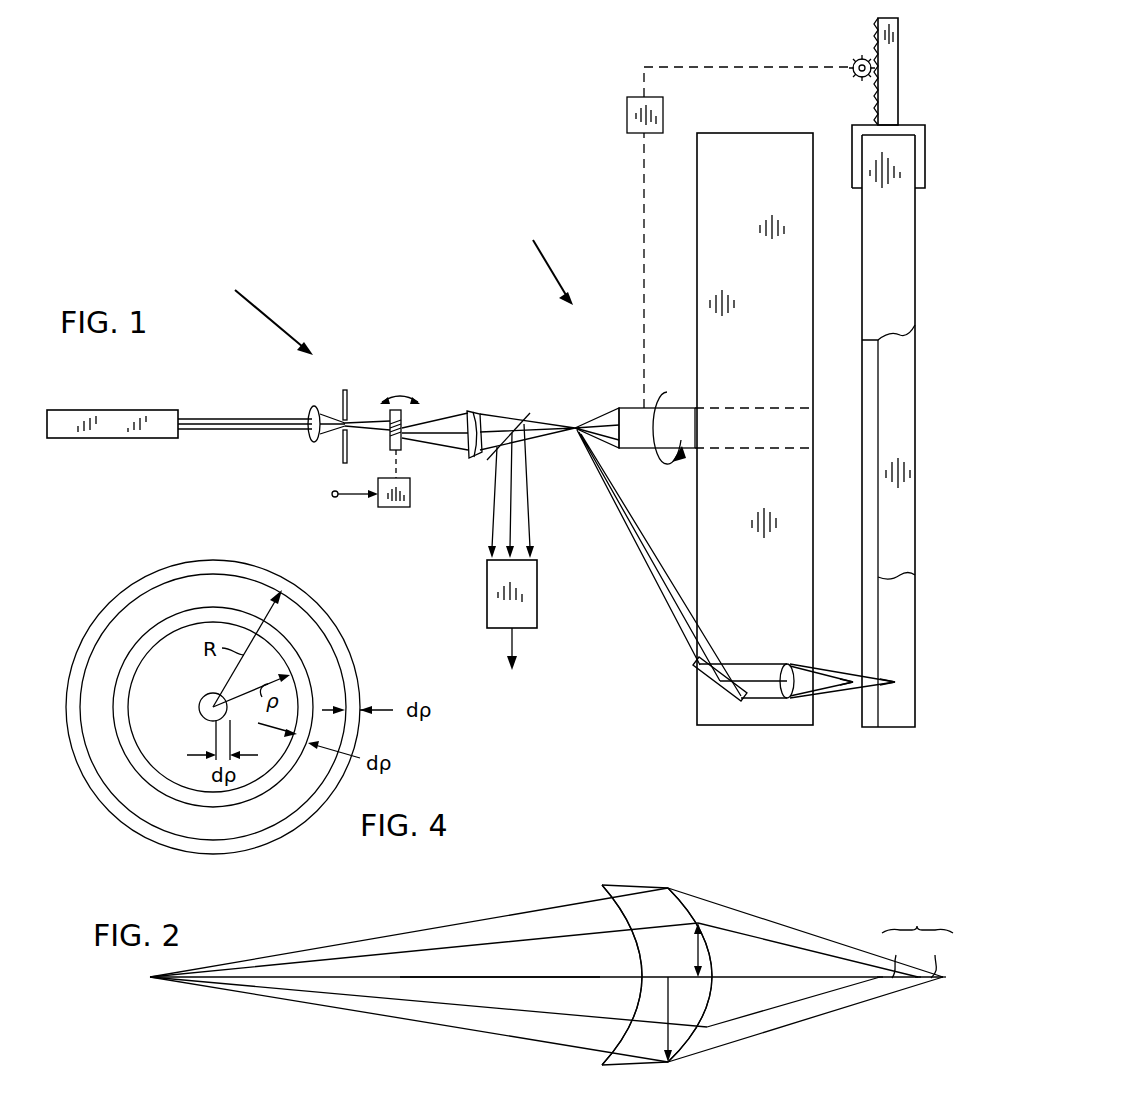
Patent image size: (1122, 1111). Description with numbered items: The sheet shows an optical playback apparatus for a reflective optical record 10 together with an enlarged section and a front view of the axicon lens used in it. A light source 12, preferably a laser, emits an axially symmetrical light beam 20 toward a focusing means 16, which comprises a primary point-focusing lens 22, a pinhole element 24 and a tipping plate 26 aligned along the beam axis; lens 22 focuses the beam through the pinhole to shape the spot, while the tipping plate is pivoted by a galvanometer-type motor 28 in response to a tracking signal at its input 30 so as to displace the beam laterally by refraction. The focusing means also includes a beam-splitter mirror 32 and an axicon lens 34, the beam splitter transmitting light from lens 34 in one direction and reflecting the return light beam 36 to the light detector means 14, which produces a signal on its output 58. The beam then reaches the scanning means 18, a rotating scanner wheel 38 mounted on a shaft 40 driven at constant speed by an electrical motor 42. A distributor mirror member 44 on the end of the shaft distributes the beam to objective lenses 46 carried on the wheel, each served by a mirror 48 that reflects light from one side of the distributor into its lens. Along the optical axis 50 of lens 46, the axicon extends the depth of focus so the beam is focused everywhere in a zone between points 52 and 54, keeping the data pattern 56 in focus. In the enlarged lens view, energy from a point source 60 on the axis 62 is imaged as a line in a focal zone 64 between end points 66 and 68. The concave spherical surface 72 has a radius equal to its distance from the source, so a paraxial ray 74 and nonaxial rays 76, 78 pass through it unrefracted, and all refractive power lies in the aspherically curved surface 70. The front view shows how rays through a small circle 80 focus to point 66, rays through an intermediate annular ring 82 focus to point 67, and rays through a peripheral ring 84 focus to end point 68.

In FIG. 1, the optical record 10 is at (862, 262).
In FIG. 1, the light source 12 is at (155, 408).
In FIG. 1, the light detector means 14 is at (538, 573).
In FIG. 1, the focusing means 16 is at (259, 314).
In FIG. 1, the scanning means 18 is at (539, 259).
In FIG. 1, the light beam 20 is at (216, 420).
In FIG. 1, the primary point-focusing lens 22 is at (314, 443).
In FIG. 1, the pinhole element 24 is at (350, 393).
In FIG. 1, the tipping plate 26 is at (405, 412).
In FIG. 1, the galvanometer-type motor 28 is at (394, 508).
In FIG. 1, the input 30 is at (331, 495).
In FIG. 1, the beam-splitter mirror 32 is at (515, 415).
In FIG. 1, the axicon lens 34 is at (470, 410).
In FIG. 2, the axicon lens 34 is at (636, 885).
In FIG. 1, the return light beam 36 is at (530, 516).
In FIG. 1, the rotating scanner wheel 38 is at (737, 133).
In FIG. 1, the shaft 40 is at (688, 405).
In FIG. 1, the electrical motor 42 is at (627, 112).
In FIG. 1, the distributor mirror member 44 is at (603, 410).
In FIG. 1, the objective lenses 46 is at (787, 700).
In FIG. 1, the mirror 48 is at (722, 700).
In FIG. 1, the optical axis 50 is at (832, 670).
In FIG. 1, the focal zone end point 52 is at (853, 688).
In FIG. 1, the focal zone end point 54 is at (897, 688).
In FIG. 1, the data pattern 56 is at (915, 575).
In FIG. 1, the output 58 is at (505, 648).
In FIG. 2, the point source 60 is at (150, 978).
In FIG. 2, the axis 62 is at (523, 978).
In FIG. 2, the focal zone 64 is at (917, 928).
In FIG. 2, the end point 66 is at (880, 980).
In FIG. 2, the point 67 is at (918, 980).
In FIG. 2, the end point 68 is at (943, 980).
In FIG. 2, the surface 70 is at (700, 902).
In FIG. 2, the surface 72 is at (600, 912).
In FIG. 2, the paraxial ray 74 is at (223, 975).
In FIG. 2, the nonaxial ray 76 is at (298, 961).
In FIG. 2, the nonaxial ray 78 is at (350, 942).
In FIG. 4, the small circle 80 is at (199, 703).
In FIG. 2, the small circle 80 is at (713, 977).
In FIG. 4, the annular ring 82 is at (138, 638).
In FIG. 2, the annular ring 82 is at (698, 923).
In FIG. 4, the annular ring 84 is at (70, 668).
In FIG. 2, the annular ring 84 is at (668, 888).